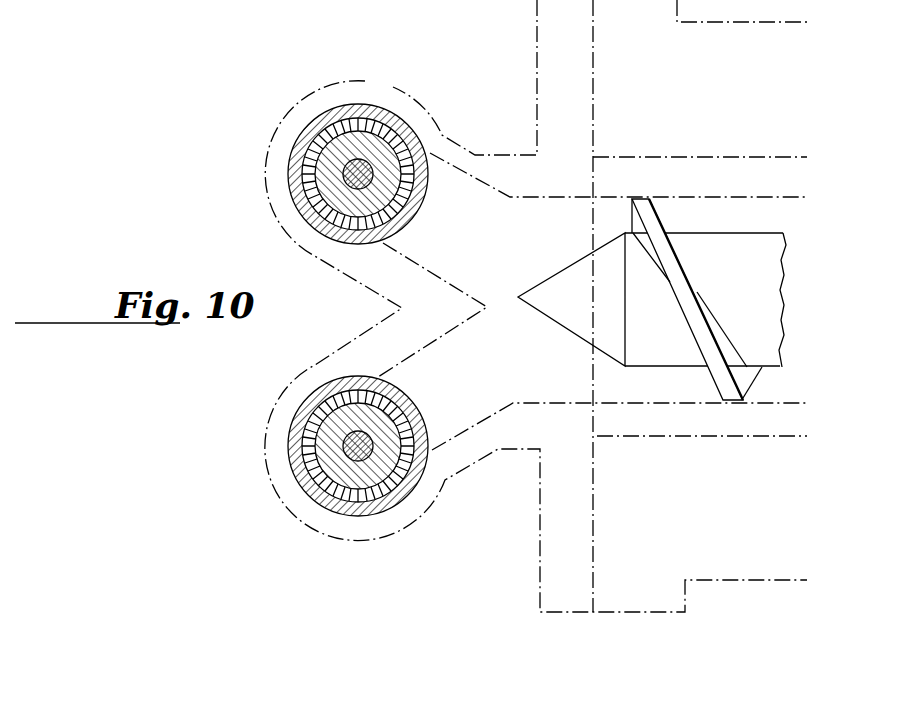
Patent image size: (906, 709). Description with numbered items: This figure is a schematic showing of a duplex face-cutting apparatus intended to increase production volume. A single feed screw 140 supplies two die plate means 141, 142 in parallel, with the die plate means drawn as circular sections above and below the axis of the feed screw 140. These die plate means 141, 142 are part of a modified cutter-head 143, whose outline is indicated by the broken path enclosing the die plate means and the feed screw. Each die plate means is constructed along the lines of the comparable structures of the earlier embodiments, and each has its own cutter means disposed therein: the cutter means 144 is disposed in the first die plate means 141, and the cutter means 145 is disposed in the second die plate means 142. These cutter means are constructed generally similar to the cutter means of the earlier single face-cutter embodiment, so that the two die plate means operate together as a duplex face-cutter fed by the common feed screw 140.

The feed screw 140 is at (767, 283).
The die plate means 141 is at (385, 137).
The die plate means 142 is at (390, 479).
The cutter-head 143 is at (560, 25).
The cutter means 144 is at (363, 123).
The cutter means 145 is at (367, 487).